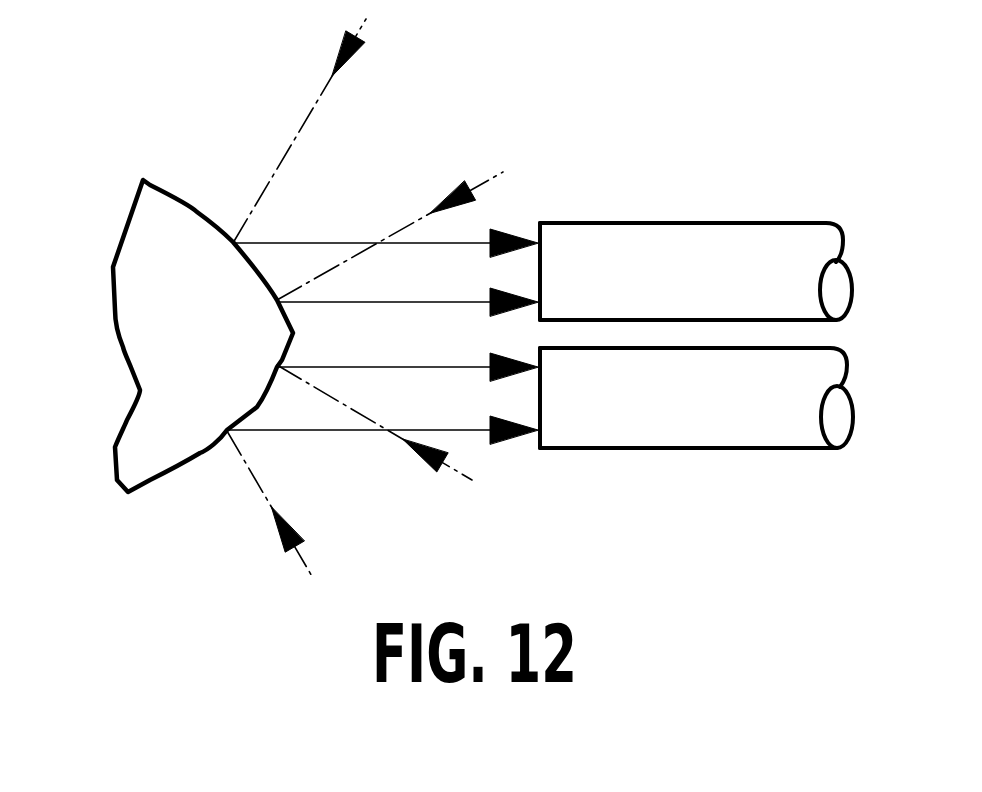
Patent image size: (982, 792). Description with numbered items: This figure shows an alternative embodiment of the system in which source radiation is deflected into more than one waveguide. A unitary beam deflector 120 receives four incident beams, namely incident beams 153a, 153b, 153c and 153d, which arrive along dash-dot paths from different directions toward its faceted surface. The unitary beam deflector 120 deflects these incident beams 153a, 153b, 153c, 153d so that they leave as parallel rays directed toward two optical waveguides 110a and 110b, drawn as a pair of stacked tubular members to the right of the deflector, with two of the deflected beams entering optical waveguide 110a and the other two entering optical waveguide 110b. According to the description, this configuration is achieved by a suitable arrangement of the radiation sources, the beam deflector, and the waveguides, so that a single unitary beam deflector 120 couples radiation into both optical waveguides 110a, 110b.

The unitary beam deflector 120 is at (130, 372).
The optical waveguide 110a is at (792, 223).
The optical waveguide 110b is at (740, 448).
The incident beam 153a is at (298, 144).
The incident beam 153b is at (488, 173).
The incident beam 153c is at (400, 437).
The incident beam 153d is at (303, 563).